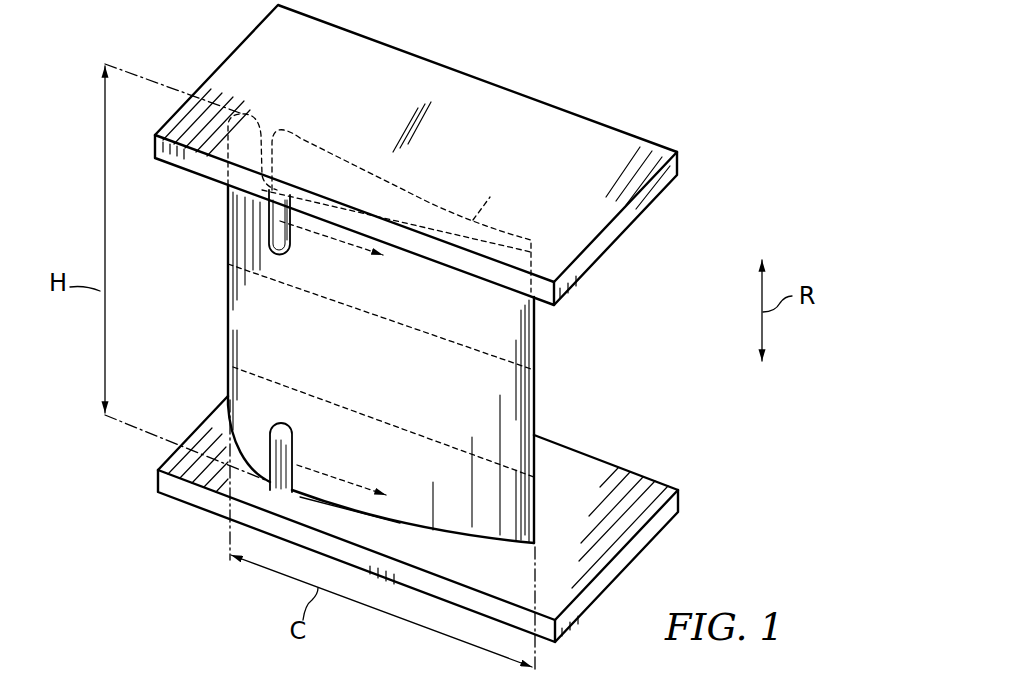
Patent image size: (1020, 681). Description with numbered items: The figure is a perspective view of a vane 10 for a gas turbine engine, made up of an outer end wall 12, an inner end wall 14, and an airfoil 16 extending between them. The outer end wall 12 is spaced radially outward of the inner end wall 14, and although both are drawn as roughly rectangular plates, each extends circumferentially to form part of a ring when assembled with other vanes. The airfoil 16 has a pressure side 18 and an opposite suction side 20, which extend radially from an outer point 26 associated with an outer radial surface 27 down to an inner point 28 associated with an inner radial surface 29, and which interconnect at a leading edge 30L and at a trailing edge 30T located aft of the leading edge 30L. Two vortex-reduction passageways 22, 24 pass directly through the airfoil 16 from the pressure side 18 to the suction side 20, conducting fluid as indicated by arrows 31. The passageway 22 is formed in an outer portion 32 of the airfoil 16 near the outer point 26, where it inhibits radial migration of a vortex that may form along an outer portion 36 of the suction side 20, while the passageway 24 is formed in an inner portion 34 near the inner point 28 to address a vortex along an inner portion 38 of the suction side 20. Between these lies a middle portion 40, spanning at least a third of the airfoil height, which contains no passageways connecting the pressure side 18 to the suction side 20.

The vane 10 is at (421, 323).
The outer end wall 12 is at (643, 145).
The inner end wall 14 is at (654, 489).
The airfoil 16 is at (396, 306).
The pressure side 18 is at (314, 151).
The suction side 20 is at (464, 365).
The vortex-reduction passageway 22 is at (283, 258).
The vortex-reduction passageway 24 is at (287, 419).
The outer point 26 is at (433, 203).
The outer radial surface 27 is at (489, 192).
The inner point 28 is at (455, 528).
The inner radial surface 29 is at (433, 531).
The leading edge 30L is at (226, 333).
The trailing edge 30T is at (542, 383).
The arrows 31 is at (337, 244).
The outer portion 32 is at (523, 300).
The inner portion 34 is at (525, 490).
The outer portion of the suction side 36 is at (455, 312).
The inner portion of the suction side 38 is at (448, 468).
The middle portion 40 is at (431, 400).